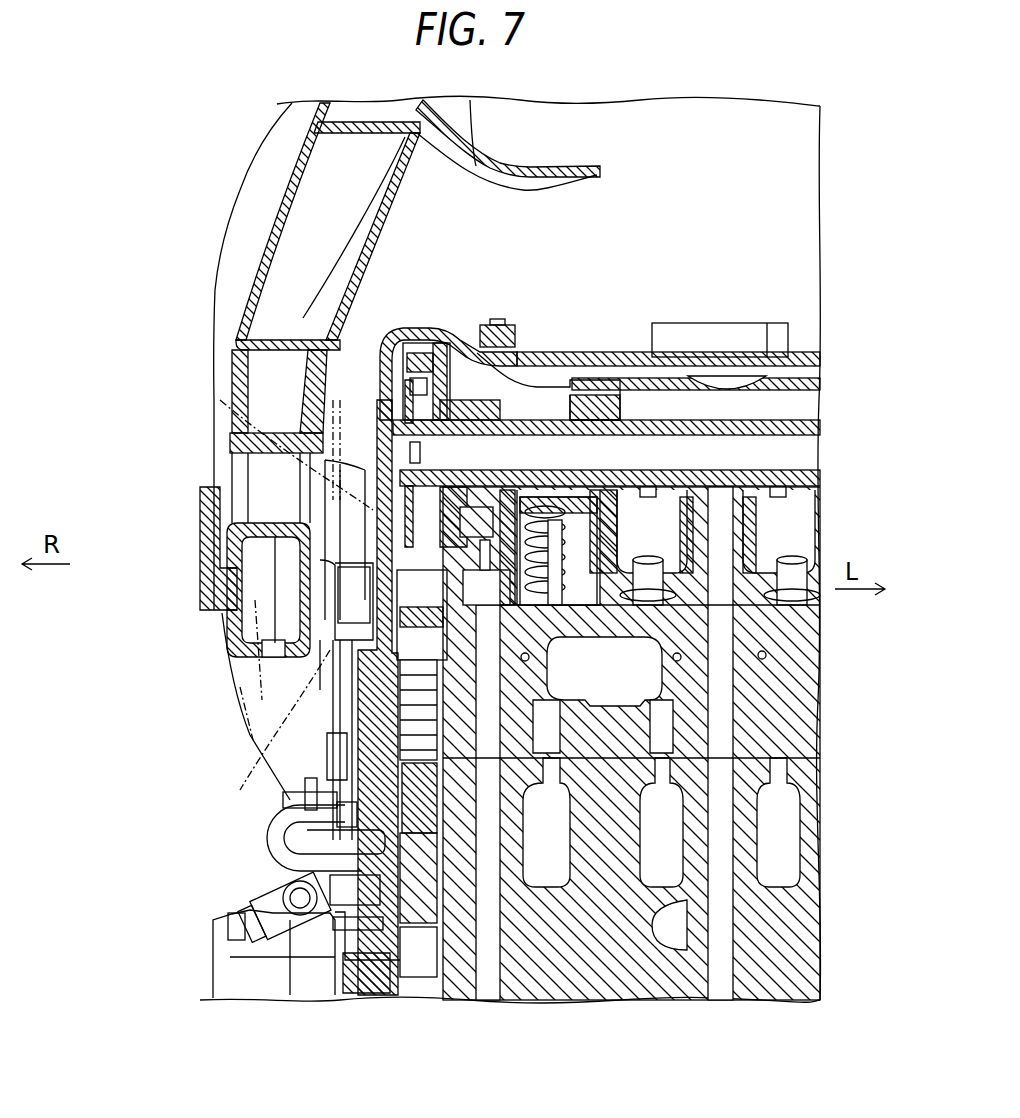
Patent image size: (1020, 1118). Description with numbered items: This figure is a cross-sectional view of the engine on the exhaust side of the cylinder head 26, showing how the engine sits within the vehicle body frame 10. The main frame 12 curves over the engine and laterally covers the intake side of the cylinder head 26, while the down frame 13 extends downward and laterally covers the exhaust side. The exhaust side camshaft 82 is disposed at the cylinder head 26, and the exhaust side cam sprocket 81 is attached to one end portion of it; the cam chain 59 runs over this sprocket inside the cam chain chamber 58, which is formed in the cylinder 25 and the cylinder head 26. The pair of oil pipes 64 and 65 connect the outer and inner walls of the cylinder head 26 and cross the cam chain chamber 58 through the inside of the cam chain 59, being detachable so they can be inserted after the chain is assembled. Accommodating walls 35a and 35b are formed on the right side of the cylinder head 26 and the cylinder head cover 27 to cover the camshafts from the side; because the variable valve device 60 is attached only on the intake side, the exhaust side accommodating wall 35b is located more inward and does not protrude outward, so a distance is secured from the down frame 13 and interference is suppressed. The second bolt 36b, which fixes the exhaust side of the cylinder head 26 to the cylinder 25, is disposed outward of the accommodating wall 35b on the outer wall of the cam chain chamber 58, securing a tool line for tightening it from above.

The vehicle body frame 10 is at (243, 118).
The main frame 12 is at (262, 178).
The down frame 13 is at (200, 537).
The cylinder 25 is at (290, 788).
The cylinder head 26 is at (330, 690).
The cylinder head cover 27 is at (432, 328).
The accommodating wall 35a is at (345, 490).
The accommodating wall 35b is at (220, 600).
The second bolt 36b is at (235, 660).
The cam chain chamber 58 is at (330, 745).
The cam chain 59 is at (710, 686).
The variable valve device 60 is at (272, 848).
The oil pipe 64 is at (345, 722).
The oil pipe 65 is at (333, 500).
The exhaust side cam sprocket 81 is at (400, 382).
The exhaust side camshaft 82 is at (675, 420).